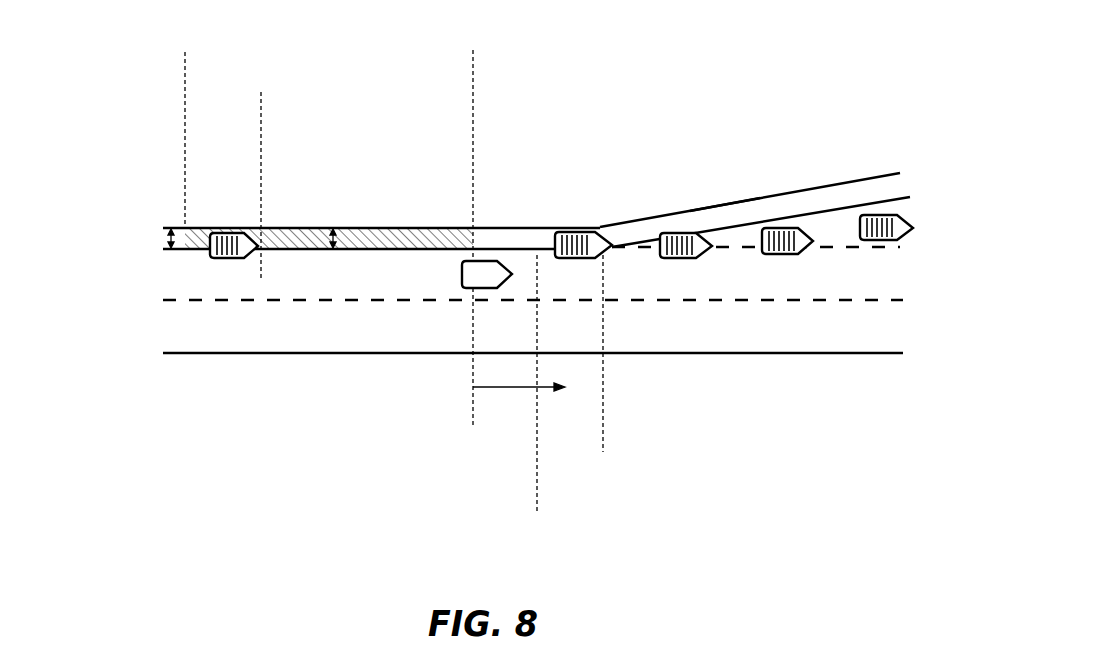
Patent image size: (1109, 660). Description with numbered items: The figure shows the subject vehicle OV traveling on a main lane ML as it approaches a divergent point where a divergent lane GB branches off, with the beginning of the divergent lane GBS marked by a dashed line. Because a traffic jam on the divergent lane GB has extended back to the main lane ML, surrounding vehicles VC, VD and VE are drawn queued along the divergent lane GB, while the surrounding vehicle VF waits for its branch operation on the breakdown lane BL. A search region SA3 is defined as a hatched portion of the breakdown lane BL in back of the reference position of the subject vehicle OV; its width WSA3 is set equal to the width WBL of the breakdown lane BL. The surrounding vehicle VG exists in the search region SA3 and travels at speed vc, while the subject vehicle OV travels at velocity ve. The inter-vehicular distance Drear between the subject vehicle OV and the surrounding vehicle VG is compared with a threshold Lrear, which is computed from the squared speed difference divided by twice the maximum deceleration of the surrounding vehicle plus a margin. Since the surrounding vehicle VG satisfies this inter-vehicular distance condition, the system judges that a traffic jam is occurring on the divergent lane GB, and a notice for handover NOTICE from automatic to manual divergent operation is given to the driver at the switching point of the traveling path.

The surrounding vehicle VG is at (228, 228).
The subject vehicle OV is at (503, 262).
The surrounding vehicle VF is at (585, 228).
The surrounding vehicle VE is at (670, 232).
The surrounding vehicle VD is at (774, 226).
The surrounding vehicle VC is at (876, 213).
The breakdown lane BL is at (731, 217).
The divergent lane GB is at (825, 228).
The beginning of divergent lane GBS is at (600, 372).
The main lane ML is at (807, 316).
The search region SA3 is at (385, 250).
The width of search region WSA3 is at (315, 248).
The width of breakdown lane WBL is at (165, 228).
The threshold Lrear is at (473, 68).
The inter-vehicular distance Drear is at (473, 122).
The speed of surrounding vehicle vc is at (250, 276).
The velocity of subject vehicle ve is at (495, 311).
The notice for handover NOTICE is at (507, 387).